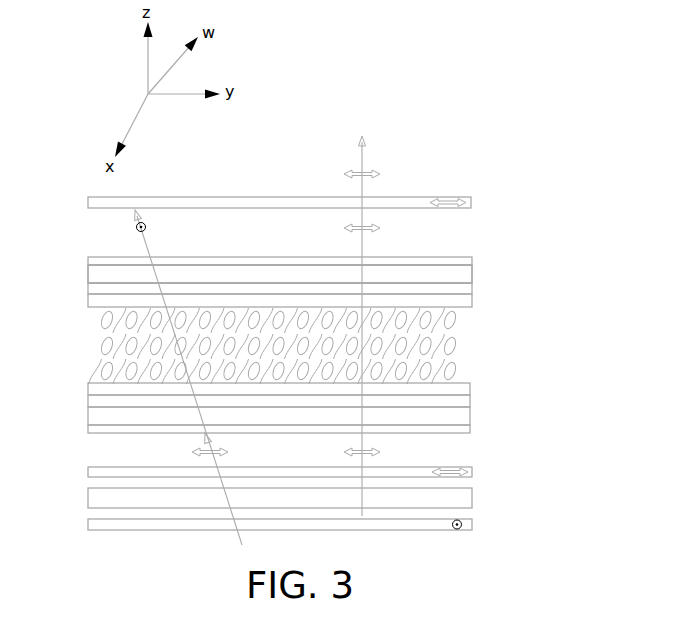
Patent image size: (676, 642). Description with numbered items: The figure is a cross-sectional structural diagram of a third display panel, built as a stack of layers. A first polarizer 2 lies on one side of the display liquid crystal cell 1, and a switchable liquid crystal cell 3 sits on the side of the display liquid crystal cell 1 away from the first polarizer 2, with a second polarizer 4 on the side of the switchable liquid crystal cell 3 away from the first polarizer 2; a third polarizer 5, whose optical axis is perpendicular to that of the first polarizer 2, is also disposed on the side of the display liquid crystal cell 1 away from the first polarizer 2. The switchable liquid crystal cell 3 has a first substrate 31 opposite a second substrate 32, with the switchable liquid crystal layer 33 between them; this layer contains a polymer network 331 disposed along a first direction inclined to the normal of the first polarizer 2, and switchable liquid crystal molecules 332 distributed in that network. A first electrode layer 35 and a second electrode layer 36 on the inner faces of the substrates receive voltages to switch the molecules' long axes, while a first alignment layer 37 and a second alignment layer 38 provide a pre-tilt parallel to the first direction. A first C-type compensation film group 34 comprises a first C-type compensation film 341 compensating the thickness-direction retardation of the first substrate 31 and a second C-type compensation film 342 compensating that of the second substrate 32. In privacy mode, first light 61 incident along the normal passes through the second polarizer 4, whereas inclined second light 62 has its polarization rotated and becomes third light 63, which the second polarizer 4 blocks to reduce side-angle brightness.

The display liquid crystal cell 1 is at (472, 498).
The first polarizer 2 is at (471, 201).
The switchable liquid crystal cell 3 is at (308, 326).
The second polarizer 4 is at (472, 472).
The third polarizer 5 is at (472, 524).
The first substrate 31 is at (472, 274).
The second substrate 32 is at (470, 418).
The switchable liquid crystal layer 33 is at (334, 346).
The polymer network 331 is at (456, 322).
The switchable liquid crystal molecules 332 is at (456, 340).
The first C-type compensation film group 34 is at (335, 326).
The first C-type compensation film 341 is at (549, 220).
The second C-type compensation film 342 is at (472, 259).
The first electrode layer 35 is at (472, 288).
The second electrode layer 36 is at (470, 400).
The first alignment layer 37 is at (472, 300).
The second alignment layer 38 is at (470, 390).
The first light 61 is at (380, 156).
The second light 62 is at (185, 445).
The third light 63 is at (153, 235).